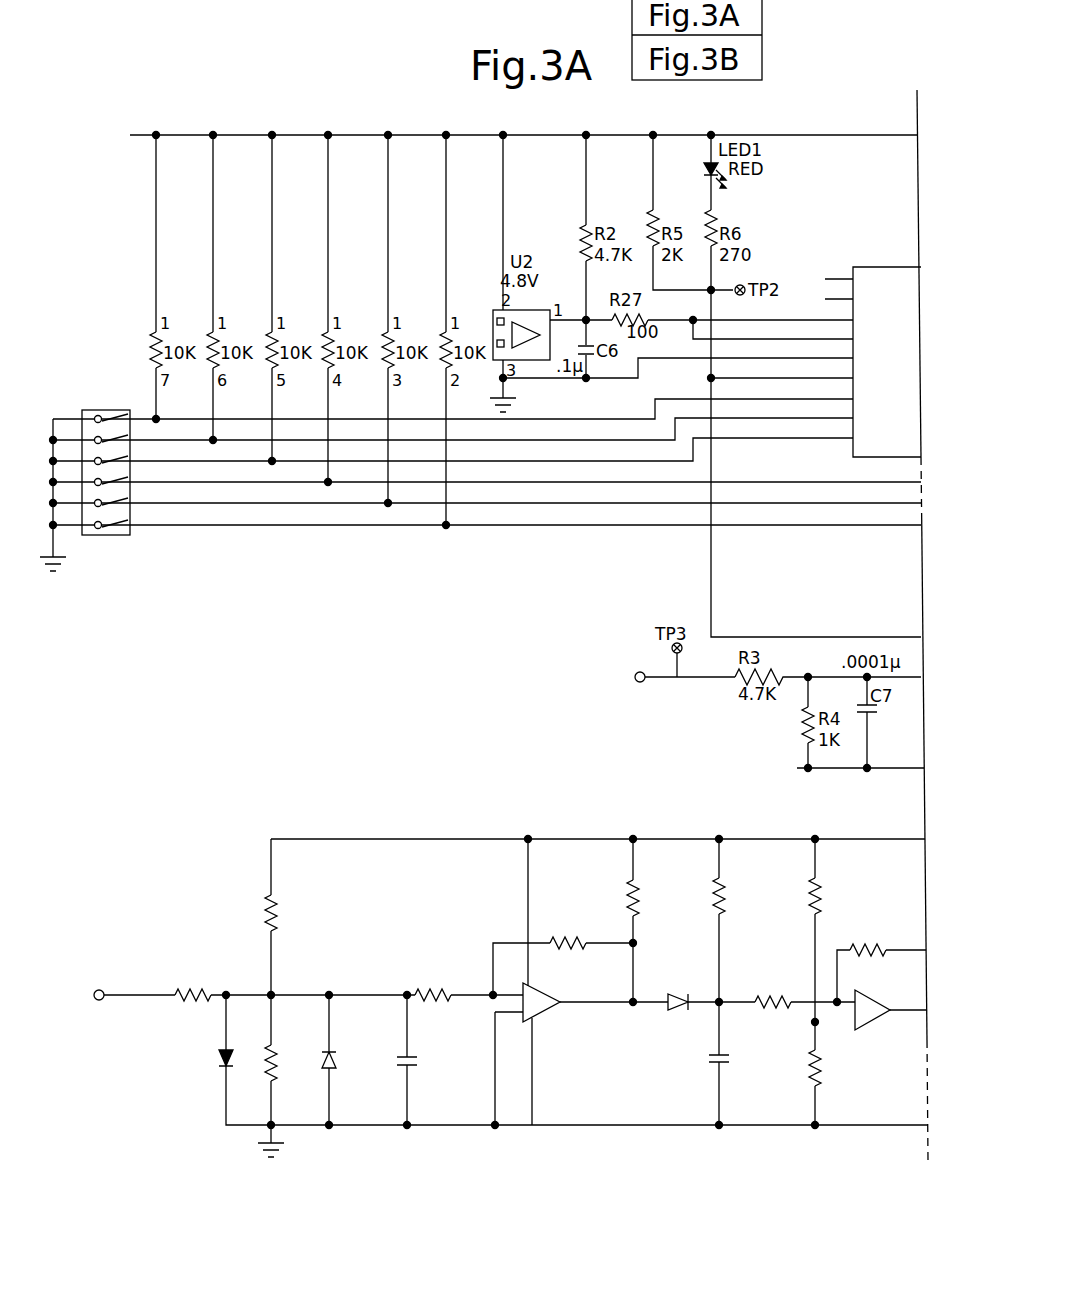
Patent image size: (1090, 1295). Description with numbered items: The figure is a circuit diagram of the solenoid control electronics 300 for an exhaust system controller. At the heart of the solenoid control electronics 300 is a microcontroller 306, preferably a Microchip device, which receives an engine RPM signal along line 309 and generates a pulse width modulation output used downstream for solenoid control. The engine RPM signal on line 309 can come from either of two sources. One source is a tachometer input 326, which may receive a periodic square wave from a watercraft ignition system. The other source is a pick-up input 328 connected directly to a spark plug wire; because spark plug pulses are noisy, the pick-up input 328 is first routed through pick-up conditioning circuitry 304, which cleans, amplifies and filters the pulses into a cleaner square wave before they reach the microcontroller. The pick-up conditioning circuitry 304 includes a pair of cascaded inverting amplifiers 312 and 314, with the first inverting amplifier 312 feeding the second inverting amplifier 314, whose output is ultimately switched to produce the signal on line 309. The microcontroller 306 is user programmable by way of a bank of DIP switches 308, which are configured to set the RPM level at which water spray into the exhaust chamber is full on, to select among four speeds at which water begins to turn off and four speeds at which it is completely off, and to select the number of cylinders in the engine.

The solenoid control electronics 300 is at (283, 60).
The pick-up conditioning circuitry 304 is at (386, 806).
The microcontroller 306 is at (863, 240).
The bank of DIP switches 308 is at (110, 560).
The line carrying the engine RPM signal 309 is at (716, 598).
The inverting amplifier 312 is at (482, 930).
The inverting amplifier 314 is at (856, 1030).
The tachometer input 326 is at (632, 672).
The pick-up input 328 is at (106, 988).